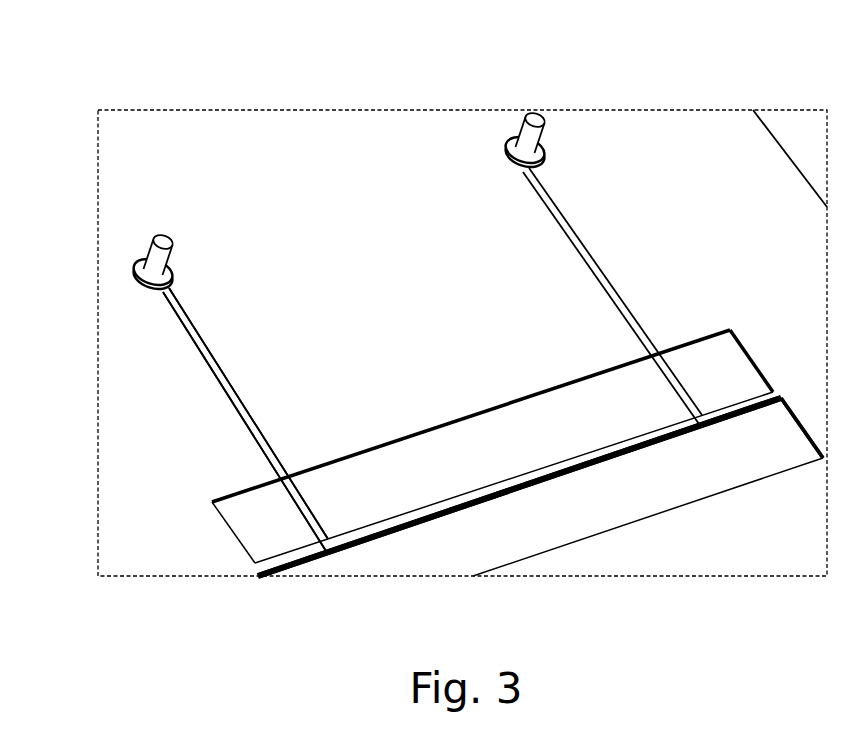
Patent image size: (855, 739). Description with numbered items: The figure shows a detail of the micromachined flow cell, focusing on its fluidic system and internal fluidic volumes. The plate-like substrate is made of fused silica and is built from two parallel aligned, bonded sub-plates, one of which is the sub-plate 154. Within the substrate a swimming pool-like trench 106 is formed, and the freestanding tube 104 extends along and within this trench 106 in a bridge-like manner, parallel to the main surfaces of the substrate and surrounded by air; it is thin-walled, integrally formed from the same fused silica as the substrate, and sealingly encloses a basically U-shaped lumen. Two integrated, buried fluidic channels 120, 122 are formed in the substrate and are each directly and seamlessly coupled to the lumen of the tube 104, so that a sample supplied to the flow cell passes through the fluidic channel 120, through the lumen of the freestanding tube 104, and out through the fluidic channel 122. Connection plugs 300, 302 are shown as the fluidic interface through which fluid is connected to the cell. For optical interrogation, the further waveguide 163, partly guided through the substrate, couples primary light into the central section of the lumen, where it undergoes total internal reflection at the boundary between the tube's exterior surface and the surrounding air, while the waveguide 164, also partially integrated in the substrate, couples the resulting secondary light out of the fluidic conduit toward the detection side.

The freestanding fused silica tube 104 is at (489, 478).
The trench 106 is at (527, 527).
The fluidic channel 120 is at (211, 347).
The fluidic channel 122 is at (591, 256).
The sub-plate 154 is at (200, 389).
The further waveguide 163 is at (286, 557).
The waveguide 164 is at (725, 412).
The connection plug 300 is at (172, 222).
The connection plug 302 is at (547, 100).